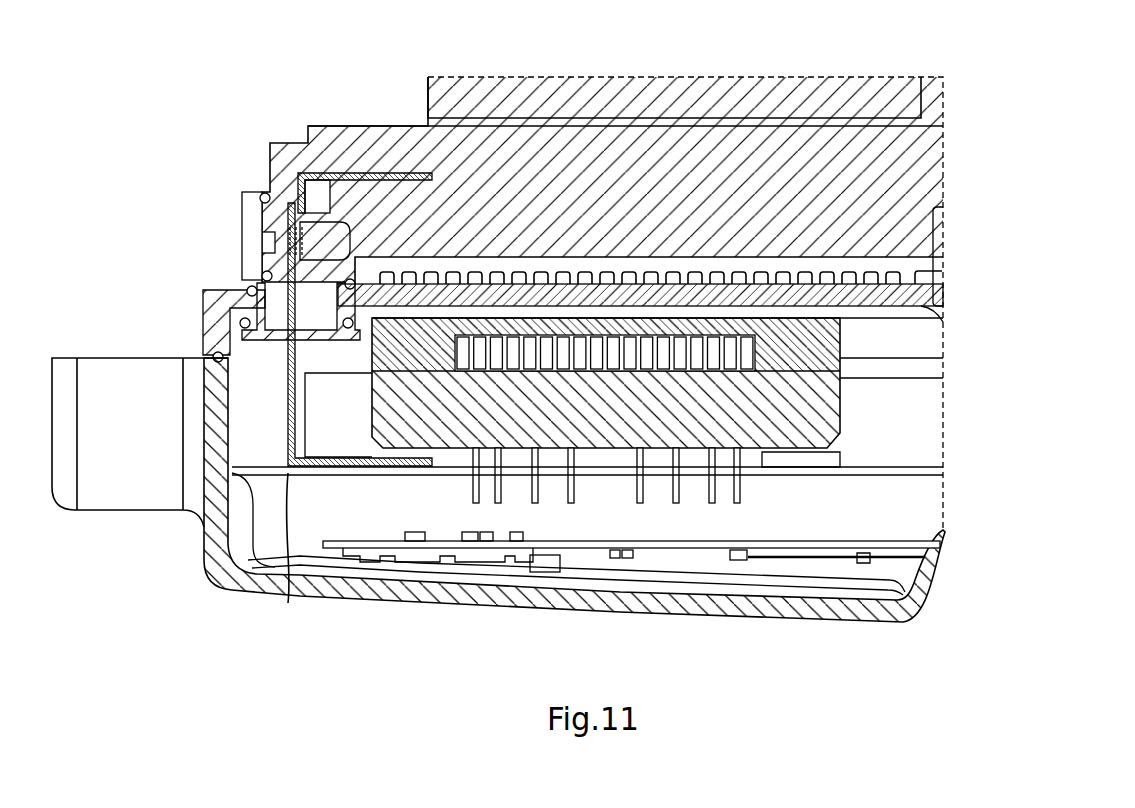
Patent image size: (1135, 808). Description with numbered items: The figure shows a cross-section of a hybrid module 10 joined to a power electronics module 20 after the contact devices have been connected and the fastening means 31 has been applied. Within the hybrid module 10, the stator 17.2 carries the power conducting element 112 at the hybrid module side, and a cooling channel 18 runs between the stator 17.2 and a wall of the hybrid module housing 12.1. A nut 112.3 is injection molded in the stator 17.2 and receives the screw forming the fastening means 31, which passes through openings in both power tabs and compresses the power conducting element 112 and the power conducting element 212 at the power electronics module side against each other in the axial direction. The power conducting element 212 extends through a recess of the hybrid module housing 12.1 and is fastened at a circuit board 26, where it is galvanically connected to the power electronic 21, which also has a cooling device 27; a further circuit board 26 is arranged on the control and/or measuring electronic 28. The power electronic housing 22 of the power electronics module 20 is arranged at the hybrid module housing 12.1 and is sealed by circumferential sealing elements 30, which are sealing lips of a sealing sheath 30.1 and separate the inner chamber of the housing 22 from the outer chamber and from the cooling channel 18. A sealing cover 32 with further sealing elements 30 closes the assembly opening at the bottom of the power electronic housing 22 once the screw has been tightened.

The hybrid module 10 is at (108, 97).
The stator 17.2 is at (268, 190).
The power conducting element 112 is at (303, 170).
The nut 112.3 is at (323, 207).
The cooling channel 18 is at (520, 272).
The sealing element 30 is at (350, 282).
The fastening means 31 is at (273, 233).
The sealing cover 32 is at (258, 262).
The sealing sheath 30.1 is at (253, 310).
The hybrid module housing 12.1 is at (213, 307).
The power conducting element 212 is at (287, 400).
The power electronics module 20 is at (125, 563).
The power electronic housing 22 is at (200, 563).
The circuit board 26 is at (333, 548).
The control and/or measuring electronic 28 is at (467, 557).
The power electronic 21 is at (613, 438).
The cooling device 27 is at (801, 459).